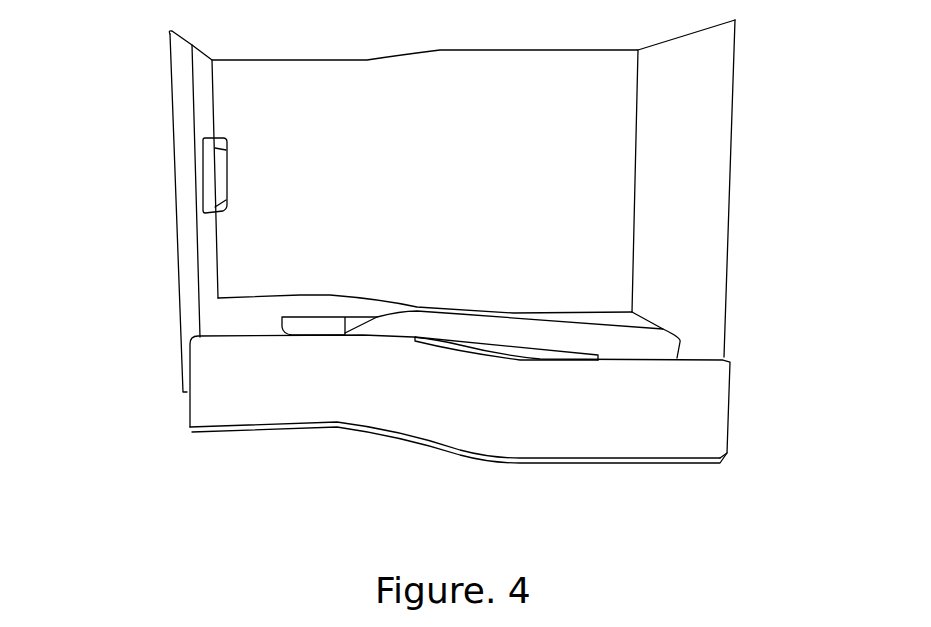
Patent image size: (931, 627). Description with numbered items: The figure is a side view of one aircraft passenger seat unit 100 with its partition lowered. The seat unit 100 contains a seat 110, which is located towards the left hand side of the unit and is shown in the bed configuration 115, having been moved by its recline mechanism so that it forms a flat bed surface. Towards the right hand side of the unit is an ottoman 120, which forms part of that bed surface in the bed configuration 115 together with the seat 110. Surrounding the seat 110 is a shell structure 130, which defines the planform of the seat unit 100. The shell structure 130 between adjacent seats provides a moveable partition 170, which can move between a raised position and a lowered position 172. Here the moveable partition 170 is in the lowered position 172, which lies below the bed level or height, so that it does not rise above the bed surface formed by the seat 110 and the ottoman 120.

The seat unit 100 is at (804, 127).
The shell structure 130 is at (723, 235).
The ottoman 120 is at (242, 313).
The seat 110 is at (636, 427).
The bed configuration 115 is at (593, 339).
The moveable partition 170 is at (442, 439).
The lowered position 172 is at (283, 395).